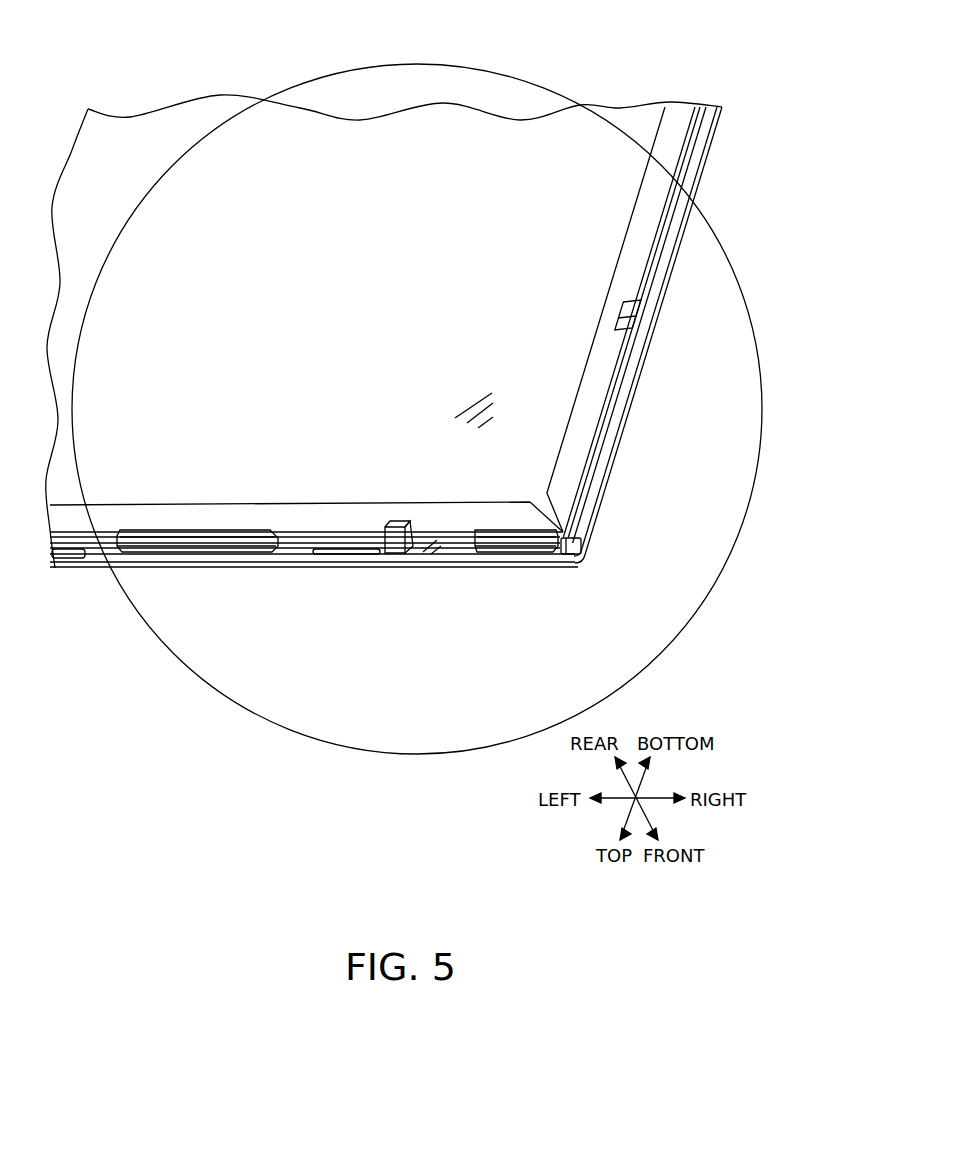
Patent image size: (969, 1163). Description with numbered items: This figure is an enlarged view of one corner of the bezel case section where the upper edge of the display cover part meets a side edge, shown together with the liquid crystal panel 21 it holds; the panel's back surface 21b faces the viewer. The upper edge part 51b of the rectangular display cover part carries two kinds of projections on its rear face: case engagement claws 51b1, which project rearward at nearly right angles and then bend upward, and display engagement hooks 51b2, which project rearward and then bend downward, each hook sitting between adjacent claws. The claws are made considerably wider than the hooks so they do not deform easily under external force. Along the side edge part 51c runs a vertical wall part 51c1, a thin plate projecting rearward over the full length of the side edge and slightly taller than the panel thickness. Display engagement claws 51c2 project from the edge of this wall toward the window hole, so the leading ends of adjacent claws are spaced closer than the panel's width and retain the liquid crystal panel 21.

The liquid crystal panel 21 is at (646, 127).
The back surface of the liquid crystal panel 21b is at (577, 132).
The upper edge part 51b is at (315, 539).
The case engagement claw 51b1 is at (202, 548).
The display engagement hook 51b2 is at (410, 528).
The side edge part 51c is at (648, 335).
The vertical wall part 51c1 is at (637, 358).
The display engagement claw 51c2 is at (632, 304).